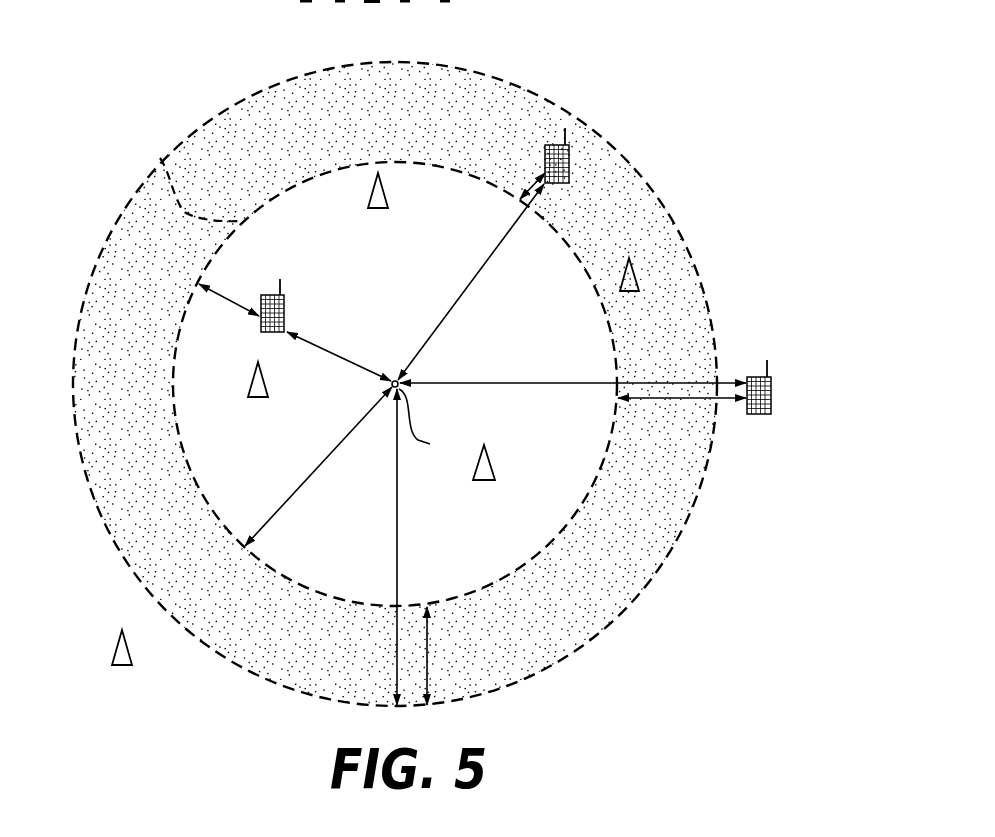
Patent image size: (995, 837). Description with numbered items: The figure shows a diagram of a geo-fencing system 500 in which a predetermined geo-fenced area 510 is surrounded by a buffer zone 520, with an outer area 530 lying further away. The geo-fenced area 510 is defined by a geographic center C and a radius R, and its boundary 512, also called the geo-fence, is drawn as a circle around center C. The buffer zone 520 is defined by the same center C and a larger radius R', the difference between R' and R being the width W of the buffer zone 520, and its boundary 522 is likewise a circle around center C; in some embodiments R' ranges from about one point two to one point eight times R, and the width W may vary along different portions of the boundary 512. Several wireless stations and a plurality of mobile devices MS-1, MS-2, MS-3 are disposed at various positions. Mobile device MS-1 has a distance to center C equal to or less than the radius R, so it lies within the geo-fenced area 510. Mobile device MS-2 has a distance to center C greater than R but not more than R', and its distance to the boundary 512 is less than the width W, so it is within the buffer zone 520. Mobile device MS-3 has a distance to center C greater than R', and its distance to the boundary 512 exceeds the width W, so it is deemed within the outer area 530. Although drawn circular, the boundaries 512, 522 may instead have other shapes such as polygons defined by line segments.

The geo-fencing system 500 is at (647, 21).
The predetermined geo-fenced area 510 is at (456, 586).
The boundary of the geo-fenced area 512 is at (162, 158).
The buffer zone 520 is at (598, 586).
The boundary of the buffer zone 522 is at (207, 122).
The outer area 530 is at (661, 672).
The mobile device MS-1 is at (284, 307).
The mobile device MS-2 is at (569, 162).
The mobile device MS-3 is at (771, 392).